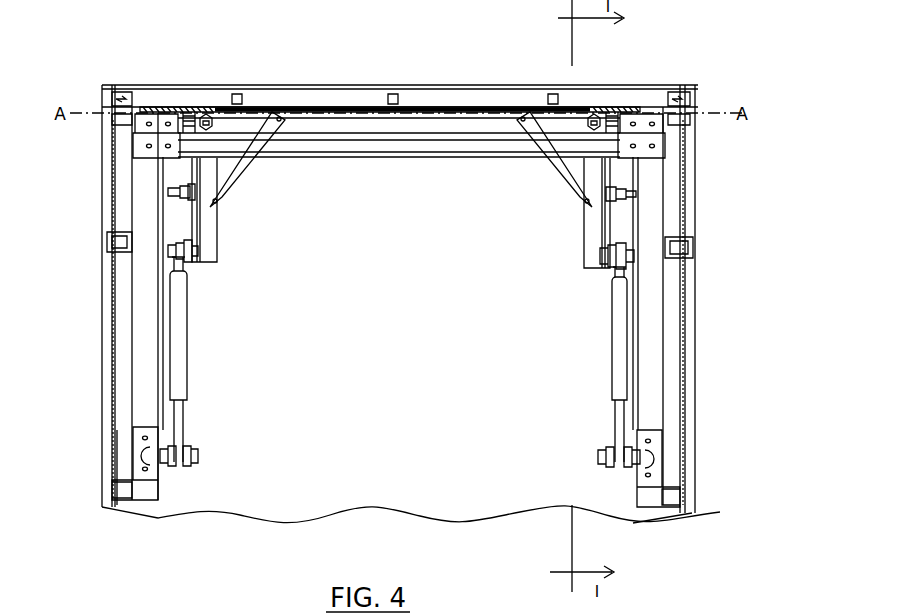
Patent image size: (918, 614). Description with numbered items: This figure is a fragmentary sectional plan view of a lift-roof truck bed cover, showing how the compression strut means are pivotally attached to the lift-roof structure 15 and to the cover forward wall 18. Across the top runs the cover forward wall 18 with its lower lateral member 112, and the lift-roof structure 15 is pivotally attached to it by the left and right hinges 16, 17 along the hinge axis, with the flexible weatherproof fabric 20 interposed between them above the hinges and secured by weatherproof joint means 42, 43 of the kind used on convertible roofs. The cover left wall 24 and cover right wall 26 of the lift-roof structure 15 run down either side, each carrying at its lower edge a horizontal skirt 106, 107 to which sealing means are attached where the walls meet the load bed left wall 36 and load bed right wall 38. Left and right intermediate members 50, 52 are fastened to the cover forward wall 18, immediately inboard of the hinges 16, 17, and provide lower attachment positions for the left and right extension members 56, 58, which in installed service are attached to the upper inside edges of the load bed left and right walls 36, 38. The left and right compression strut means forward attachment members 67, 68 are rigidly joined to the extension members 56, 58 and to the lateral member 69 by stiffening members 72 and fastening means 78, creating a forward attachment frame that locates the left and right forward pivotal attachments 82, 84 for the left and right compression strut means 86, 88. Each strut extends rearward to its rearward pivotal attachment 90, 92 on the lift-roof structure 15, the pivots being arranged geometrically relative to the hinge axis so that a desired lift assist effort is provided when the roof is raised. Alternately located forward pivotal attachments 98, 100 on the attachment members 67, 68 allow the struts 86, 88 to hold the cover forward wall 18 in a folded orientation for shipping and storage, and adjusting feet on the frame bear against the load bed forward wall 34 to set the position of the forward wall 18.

The lift-roof structure 15 is at (120, 413).
The left hinge 16 is at (150, 120).
The right hinge 17 is at (642, 110).
The cover forward wall 18 is at (305, 95).
The flexible weatherproof fabric 20 is at (112, 195).
The cover left wall 24 is at (115, 353).
The cover right wall 26 is at (682, 395).
The load bed forward wall 34 is at (415, 86).
The load bed left wall 36 is at (102, 470).
The load bed right wall 38 is at (690, 478).
The weatherproof joint means 42 is at (112, 90).
The weatherproof joint means 43 is at (108, 245).
The left intermediate member 50 is at (186, 112).
The right intermediate member 52 is at (612, 112).
The left extension member 56 is at (205, 112).
The right extension member 58 is at (592, 112).
The left compression strut means forward attachment member 67 is at (215, 252).
The right compression strut means forward attachment member 68 is at (583, 252).
The lateral member 69 is at (395, 125).
The stiffening member 72 is at (248, 168).
The fastening means 78 is at (283, 122).
The left forward pivotal attachment 82 is at (190, 260).
The right forward pivotal attachment 84 is at (612, 260).
The left compression strut means 86 is at (185, 370).
The right compression strut means 88 is at (613, 370).
The left compression strut means rearward pivotal attachment 90 is at (195, 462).
The right compression strut means rearward pivotal attachment 92 is at (600, 455).
The alternately located compression strut means forward pivotal attachment 98 is at (170, 197).
The alternately located compression strut means forward pivotal attachment 100 is at (632, 194).
The left horizontal skirt 106 is at (142, 292).
The right horizontal skirt 107 is at (660, 325).
The lower lateral member 112 is at (445, 102).